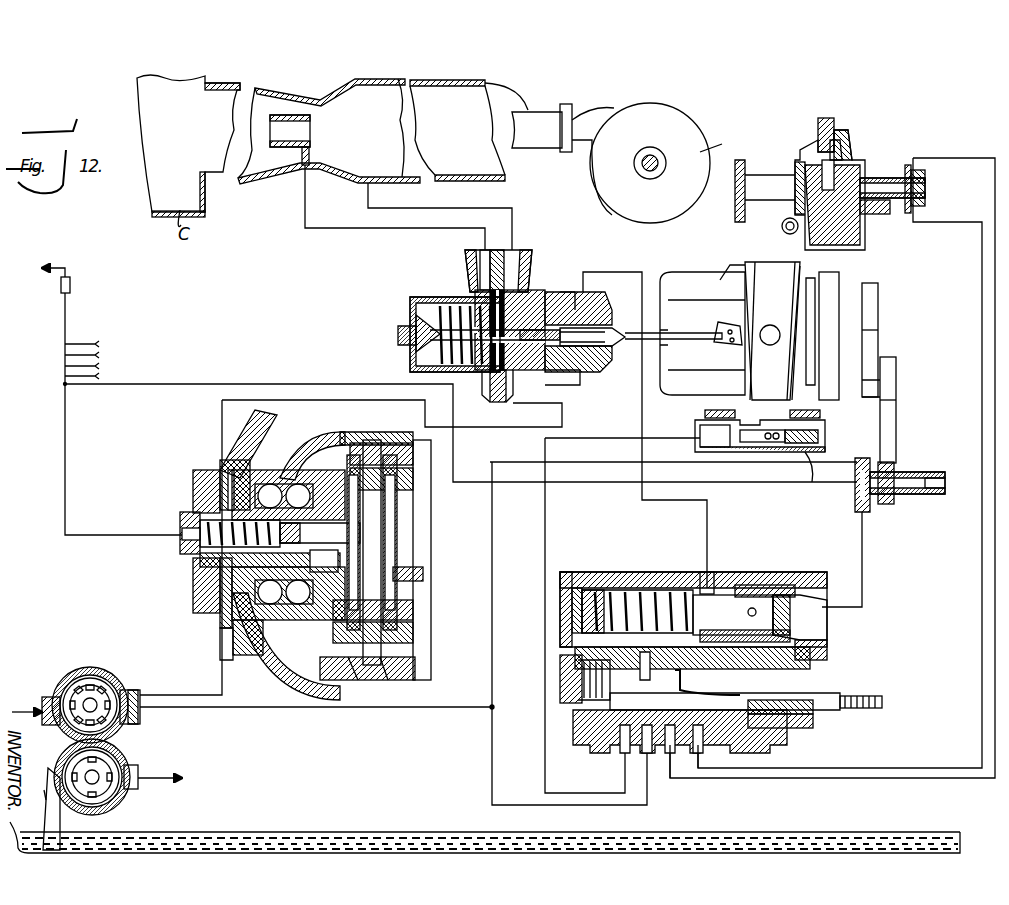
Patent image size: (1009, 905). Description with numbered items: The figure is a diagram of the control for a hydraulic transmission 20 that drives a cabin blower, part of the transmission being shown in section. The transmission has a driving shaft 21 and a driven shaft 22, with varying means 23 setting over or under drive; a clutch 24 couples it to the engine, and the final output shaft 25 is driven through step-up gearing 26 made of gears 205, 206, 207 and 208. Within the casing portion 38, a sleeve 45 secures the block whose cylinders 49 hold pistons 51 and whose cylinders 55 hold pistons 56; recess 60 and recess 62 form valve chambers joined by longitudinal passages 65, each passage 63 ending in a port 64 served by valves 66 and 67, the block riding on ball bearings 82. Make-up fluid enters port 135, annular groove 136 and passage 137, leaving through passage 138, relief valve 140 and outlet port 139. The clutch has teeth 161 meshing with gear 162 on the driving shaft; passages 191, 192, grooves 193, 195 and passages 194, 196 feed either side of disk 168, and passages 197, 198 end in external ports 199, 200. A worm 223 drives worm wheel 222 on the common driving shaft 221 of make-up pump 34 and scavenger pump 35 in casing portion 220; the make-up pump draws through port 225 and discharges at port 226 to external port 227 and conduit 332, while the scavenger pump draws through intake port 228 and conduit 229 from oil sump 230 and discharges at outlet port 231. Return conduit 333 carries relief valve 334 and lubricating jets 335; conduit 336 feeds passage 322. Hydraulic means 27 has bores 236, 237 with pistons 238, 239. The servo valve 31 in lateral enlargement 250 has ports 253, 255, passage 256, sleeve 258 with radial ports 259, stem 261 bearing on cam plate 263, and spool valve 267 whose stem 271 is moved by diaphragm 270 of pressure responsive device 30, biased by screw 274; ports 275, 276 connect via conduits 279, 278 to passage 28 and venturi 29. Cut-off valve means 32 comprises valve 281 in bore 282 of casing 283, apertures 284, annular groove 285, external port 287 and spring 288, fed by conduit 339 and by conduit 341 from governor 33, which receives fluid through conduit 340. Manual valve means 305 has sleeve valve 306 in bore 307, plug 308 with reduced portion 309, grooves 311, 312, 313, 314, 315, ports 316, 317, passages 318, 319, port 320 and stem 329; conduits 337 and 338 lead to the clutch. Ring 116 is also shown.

The hydraulic transmission 20 is at (722, 262).
The driving shaft 21 is at (816, 285).
The driven shaft 22 is at (866, 312).
The transmission varying means 23 is at (776, 262).
The clutch 24 is at (832, 446).
The final output shaft 25 is at (652, 172).
The step-up gearing 26 is at (904, 368).
The hydraulic means 27 is at (673, 483).
The passage 28 is at (480, 97).
The venturi 29 is at (312, 120).
The pressure responsive device 30 is at (528, 366).
The servo valve 31 is at (566, 286).
The cut-off valve means 32 is at (798, 566).
The governor 33 is at (852, 502).
The make-up pump 34 is at (112, 716).
The scavenger pump 35 is at (103, 789).
The casing portion 38 is at (264, 424).
The sleeve 45 is at (306, 428).
The cylinders 49 is at (384, 668).
The piston 51 is at (404, 446).
The cylinders 55 is at (413, 612).
The piston 56 is at (412, 480).
The recess 60 is at (413, 630).
The recess 62 is at (354, 668).
The passage 63 is at (338, 430).
The port 64 is at (290, 470).
The longitudinal passages 65 is at (402, 670).
The valve 66 is at (370, 552).
The valve 67 is at (372, 542).
The ball bearings 82 is at (270, 604).
The ring 116 is at (420, 578).
The make-up fluid inlet port 135 is at (218, 636).
The annular groove 136 is at (193, 490).
The passage 137 is at (200, 560).
The passage 138 is at (326, 561).
The make-up fluid outlet port 139 is at (182, 525).
The relief valve 140 is at (318, 528).
The teeth 161 is at (826, 118).
The gear 162 is at (838, 290).
The disk 168 is at (852, 140).
The passage 191 is at (895, 183).
The passage 192 is at (888, 212).
The external groove 193 is at (800, 188).
The passage 194 is at (795, 202).
The external groove 195 is at (862, 172).
The passage 196 is at (848, 160).
The passage 197 is at (924, 183).
The passage 198 is at (889, 235).
The external port 199 is at (910, 168).
The external port 200 is at (924, 208).
The gear 205 is at (872, 320).
The gear 206 is at (868, 418).
The gear 207 is at (890, 392).
The gear 208 is at (888, 506).
The casing portion 220 is at (64, 690).
The common driving shaft 221 is at (90, 698).
The worm wheel 222 is at (790, 234).
The worm 223 is at (797, 166).
The external port 225 is at (38, 710).
The discharge port 226 is at (136, 690).
The external port 227 is at (138, 700).
The intake port 228 is at (50, 772).
The conduit 229 is at (46, 800).
The oil sump 230 is at (318, 832).
The outlet port 231 is at (146, 772).
The bore 236 is at (812, 422).
The bore 237 is at (694, 428).
The piston 238 is at (820, 440).
The piston 239 is at (748, 452).
The lateral enlargement 250 is at (584, 290).
The port 253 is at (600, 307).
The radial port 255 is at (572, 370).
The passage 256 is at (564, 407).
The sleeve 258 is at (600, 330).
The radial ports 259 is at (590, 352).
The stem 261 is at (680, 330).
The cam plate 263 is at (714, 346).
The spool valve 267 is at (556, 328).
The diaphragm 270 is at (402, 328).
The stem 271 is at (512, 385).
The screw 274 is at (431, 334).
The port 275 is at (526, 252).
The port 276 is at (470, 252).
The conduit 278 is at (305, 208).
The conduit 279 is at (476, 194).
The valve 281 is at (802, 617).
The bore 282 is at (650, 588).
The casing 283 is at (588, 572).
The apertures 284 is at (748, 613).
The annular groove 285 is at (762, 584).
The external port 287 is at (720, 572).
The compression spring 288 is at (624, 590).
The manually-actuable valve means 305 is at (592, 748).
The sleeve valve 306 is at (815, 703).
The bore 307 is at (758, 748).
The plug 308 is at (586, 732).
The reduced and apertured portion 309 is at (580, 677).
The annular groove 311 is at (580, 650).
The annular groove 312 is at (725, 690).
The annular groove 313 is at (795, 652).
The annular groove 314 is at (718, 748).
The annular groove 315 is at (815, 718).
The external port 316 is at (624, 748).
The external port 317 is at (685, 785).
The passage 318 is at (545, 516).
The passage 319 is at (812, 662).
The port 320 is at (780, 742).
The passage 322 is at (494, 472).
The stem 329 is at (852, 694).
The conduit 332 is at (212, 695).
The conduit 333 is at (63, 437).
The relief valve 334 is at (72, 287).
The lubricating jets 335 is at (80, 346).
The conduit 336 is at (266, 708).
The conduit 337 is at (950, 158).
The conduit 338 is at (952, 224).
The conduit 339 is at (605, 272).
The conduit 340 is at (778, 484).
The conduit 341 is at (864, 578).